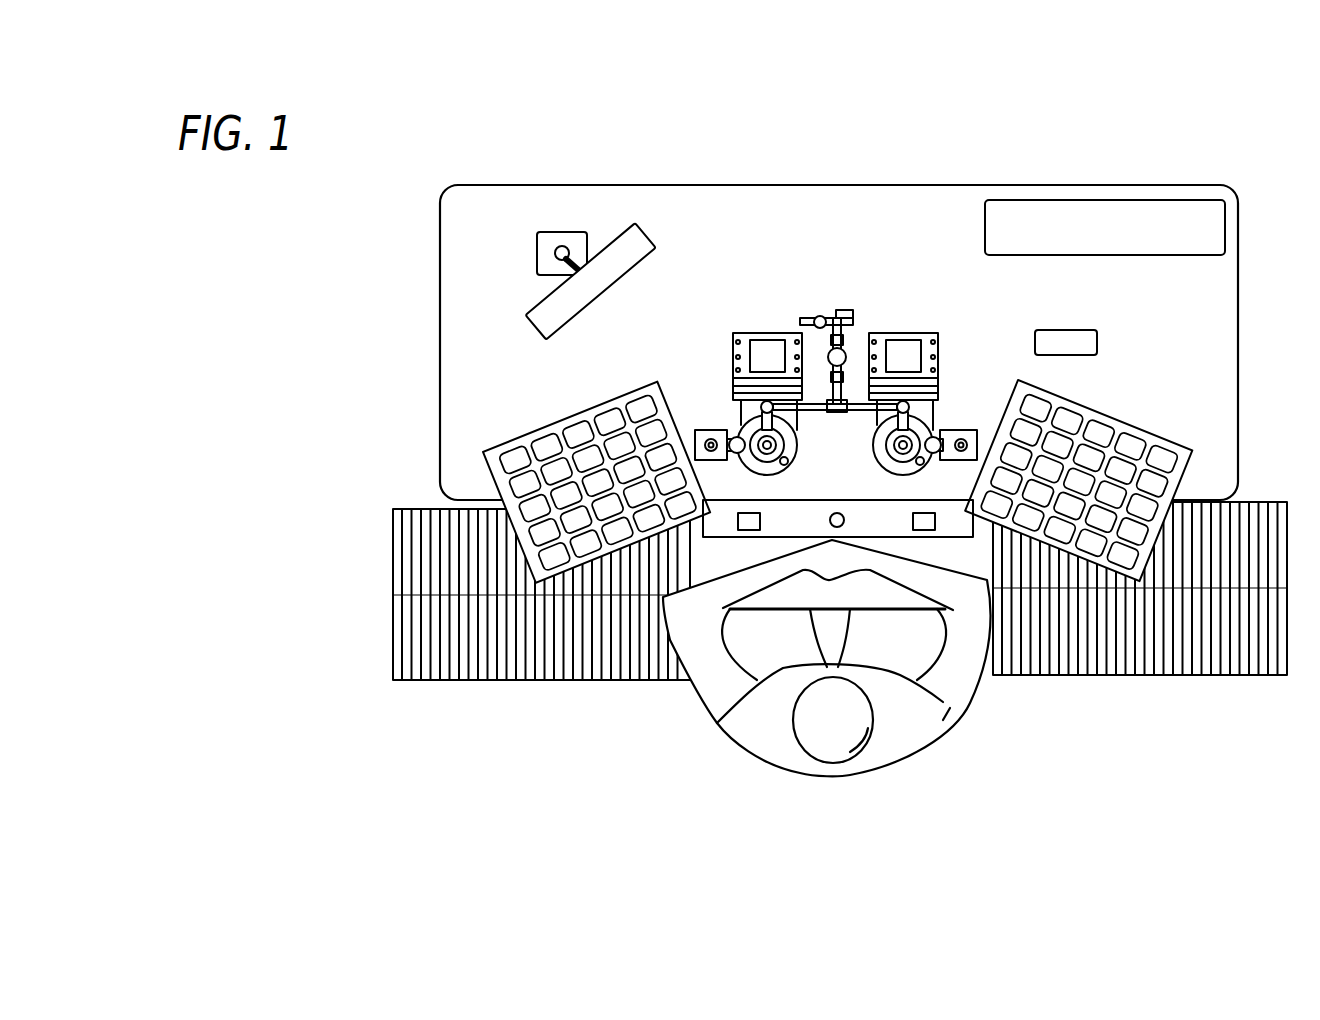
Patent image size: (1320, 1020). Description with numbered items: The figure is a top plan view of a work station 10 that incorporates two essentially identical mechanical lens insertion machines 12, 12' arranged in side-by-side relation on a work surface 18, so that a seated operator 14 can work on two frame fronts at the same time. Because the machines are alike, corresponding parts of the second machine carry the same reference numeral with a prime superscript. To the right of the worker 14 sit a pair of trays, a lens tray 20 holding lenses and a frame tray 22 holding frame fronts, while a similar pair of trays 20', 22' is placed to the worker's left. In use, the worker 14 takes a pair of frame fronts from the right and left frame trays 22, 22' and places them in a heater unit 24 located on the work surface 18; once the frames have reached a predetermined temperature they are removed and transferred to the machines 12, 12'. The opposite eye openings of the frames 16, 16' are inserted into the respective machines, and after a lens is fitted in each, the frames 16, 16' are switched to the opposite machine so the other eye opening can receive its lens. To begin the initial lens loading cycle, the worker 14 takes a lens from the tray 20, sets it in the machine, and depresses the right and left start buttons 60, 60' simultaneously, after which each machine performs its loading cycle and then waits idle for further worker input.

The work station 10 is at (822, 170).
The lens insertion machine 12 is at (903, 373).
The lens insertion machine 12' is at (767, 373).
The operator 14 is at (907, 753).
The frame 16 is at (958, 410).
The frame 16' is at (711, 410).
The work surface 18 is at (929, 234).
The lens tray 20 is at (1084, 480).
The lens tray 20' is at (594, 479).
The frame tray 22 is at (1148, 562).
The frame tray 22' is at (524, 559).
The heater unit 24 is at (1099, 343).
The start button 60 is at (889, 497).
The start button 60' is at (787, 494).